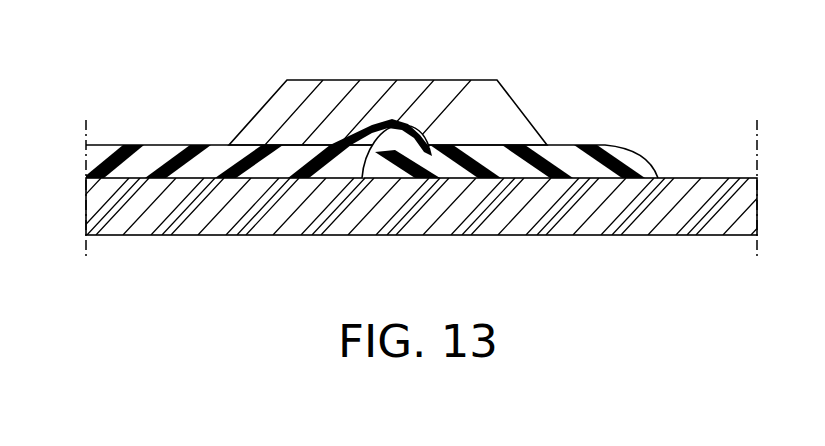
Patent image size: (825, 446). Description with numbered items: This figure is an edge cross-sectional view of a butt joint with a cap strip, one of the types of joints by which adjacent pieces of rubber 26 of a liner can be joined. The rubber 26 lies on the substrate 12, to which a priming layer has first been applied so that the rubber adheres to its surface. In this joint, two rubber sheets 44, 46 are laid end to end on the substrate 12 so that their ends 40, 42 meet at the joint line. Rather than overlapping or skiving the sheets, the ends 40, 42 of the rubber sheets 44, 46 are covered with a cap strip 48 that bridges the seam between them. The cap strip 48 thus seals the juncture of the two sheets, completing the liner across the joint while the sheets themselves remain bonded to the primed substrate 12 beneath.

The substrate 12 is at (192, 228).
The rubber 26 is at (370, 111).
The end of rubber sheet 40 is at (375, 148).
The end of rubber sheet 42 is at (374, 169).
The rubber sheet 44 is at (224, 152).
The rubber sheet 46 is at (565, 158).
The cap strip 48 is at (410, 90).